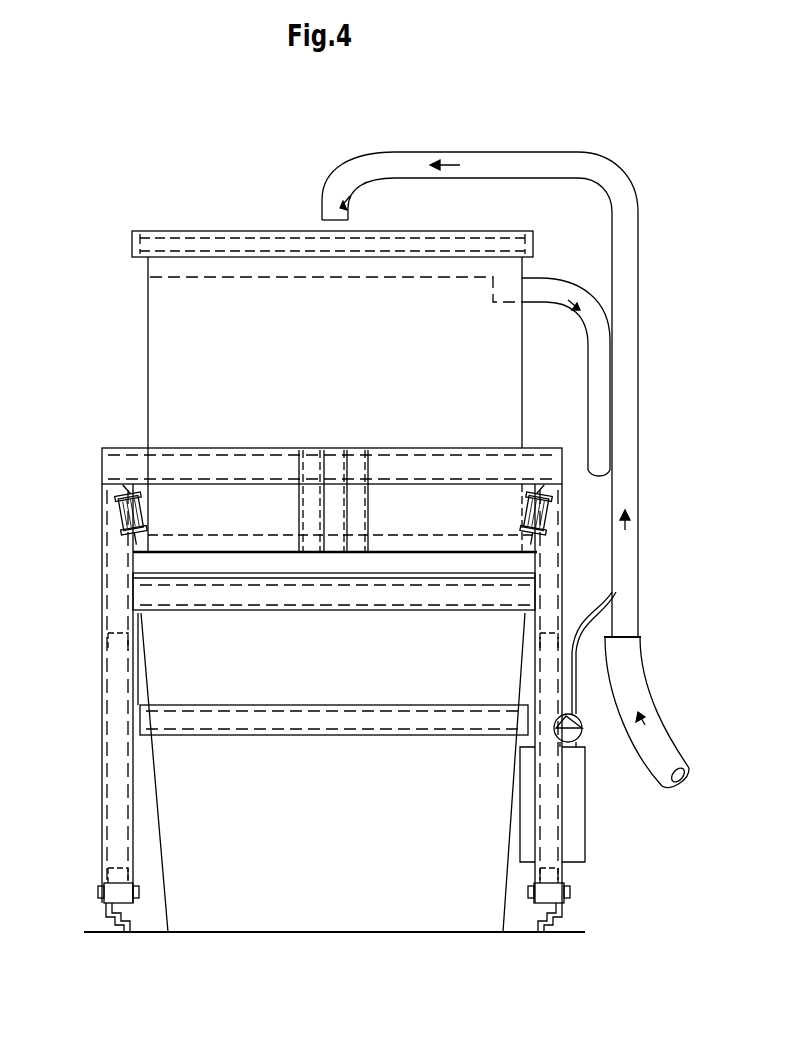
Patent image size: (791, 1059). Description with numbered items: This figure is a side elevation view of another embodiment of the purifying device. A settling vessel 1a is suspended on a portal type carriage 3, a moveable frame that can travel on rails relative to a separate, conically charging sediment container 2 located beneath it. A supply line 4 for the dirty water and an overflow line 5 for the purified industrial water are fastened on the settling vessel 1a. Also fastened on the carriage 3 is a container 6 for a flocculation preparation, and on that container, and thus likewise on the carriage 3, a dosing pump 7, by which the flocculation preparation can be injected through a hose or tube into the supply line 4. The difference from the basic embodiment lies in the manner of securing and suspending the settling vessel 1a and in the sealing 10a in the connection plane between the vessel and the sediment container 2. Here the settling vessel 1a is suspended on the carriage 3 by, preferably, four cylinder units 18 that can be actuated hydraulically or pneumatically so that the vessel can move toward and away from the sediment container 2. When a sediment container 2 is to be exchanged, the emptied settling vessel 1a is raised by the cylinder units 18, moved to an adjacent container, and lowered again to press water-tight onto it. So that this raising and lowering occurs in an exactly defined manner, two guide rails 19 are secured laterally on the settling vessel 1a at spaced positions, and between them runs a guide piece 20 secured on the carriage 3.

The settling vessel 1a is at (163, 357).
The sediment container 2 is at (183, 818).
The carriage 3 is at (550, 591).
The supply line 4 is at (525, 162).
The overflow line 5 is at (604, 338).
The container 6 is at (575, 826).
The dosing pump 7 is at (582, 736).
The sealing 10a is at (133, 575).
The cylinder units 18 is at (122, 510).
The guide rails 19 is at (353, 502).
The guide piece 20 is at (336, 458).